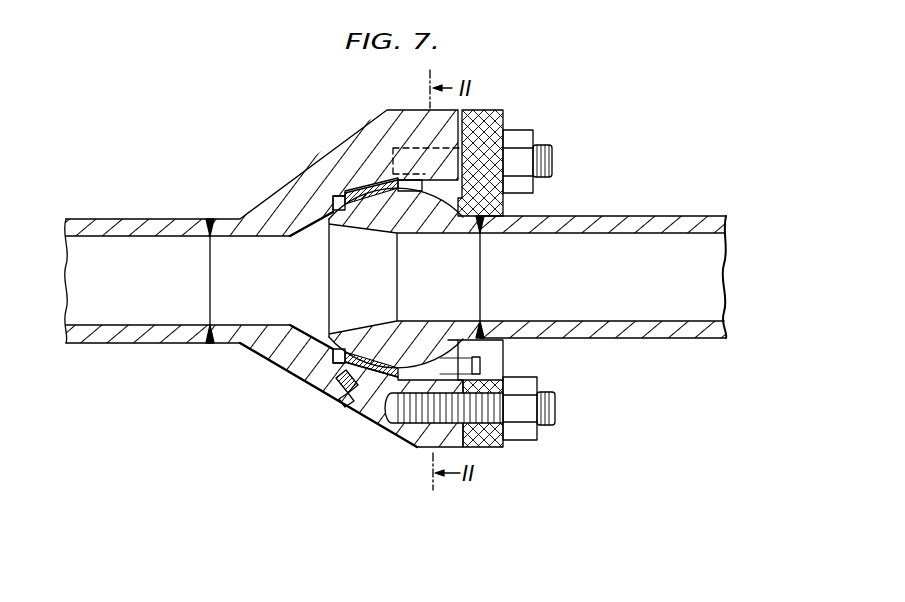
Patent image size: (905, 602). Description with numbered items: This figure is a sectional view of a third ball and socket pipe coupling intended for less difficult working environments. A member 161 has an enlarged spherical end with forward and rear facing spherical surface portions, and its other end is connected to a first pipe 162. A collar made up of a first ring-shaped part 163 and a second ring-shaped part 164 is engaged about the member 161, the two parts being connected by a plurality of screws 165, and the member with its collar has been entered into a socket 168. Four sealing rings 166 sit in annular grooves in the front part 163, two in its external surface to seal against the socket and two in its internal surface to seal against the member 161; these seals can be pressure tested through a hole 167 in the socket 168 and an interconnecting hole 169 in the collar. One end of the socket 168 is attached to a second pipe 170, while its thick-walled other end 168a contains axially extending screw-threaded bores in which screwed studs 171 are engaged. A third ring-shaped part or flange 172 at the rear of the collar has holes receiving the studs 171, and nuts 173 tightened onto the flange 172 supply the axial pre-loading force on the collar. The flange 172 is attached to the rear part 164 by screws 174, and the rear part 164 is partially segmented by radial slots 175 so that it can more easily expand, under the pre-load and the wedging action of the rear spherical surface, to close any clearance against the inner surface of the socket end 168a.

The member 161 is at (437, 224).
The first pipe 162 is at (664, 215).
The first ring-shaped part 163 is at (376, 183).
The second ring-shaped part 164 is at (497, 133).
The screws 165 is at (360, 400).
The sealing rings 166 is at (372, 191).
The hole 167 is at (345, 365).
The socket 168 is at (252, 218).
The end of the socket 168a is at (437, 111).
The interconnecting hole 169 is at (312, 386).
The second pipe 170 is at (156, 218).
The screwed studs 171 is at (428, 448).
The third ring-shaped part or flange 172 is at (493, 438).
The nuts 173 is at (523, 398).
The screws 174 is at (481, 366).
The radial slots 175 is at (495, 165).